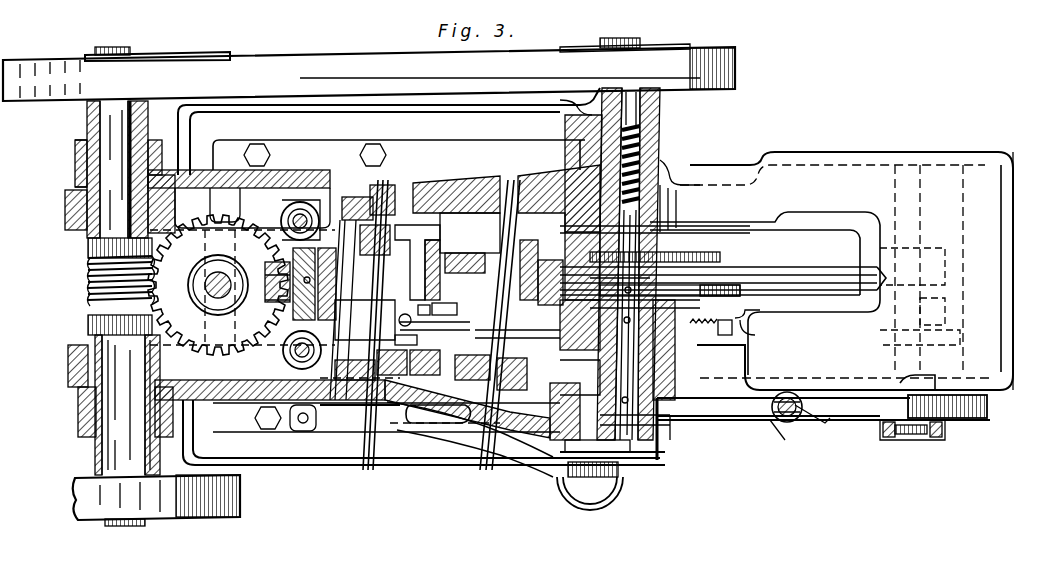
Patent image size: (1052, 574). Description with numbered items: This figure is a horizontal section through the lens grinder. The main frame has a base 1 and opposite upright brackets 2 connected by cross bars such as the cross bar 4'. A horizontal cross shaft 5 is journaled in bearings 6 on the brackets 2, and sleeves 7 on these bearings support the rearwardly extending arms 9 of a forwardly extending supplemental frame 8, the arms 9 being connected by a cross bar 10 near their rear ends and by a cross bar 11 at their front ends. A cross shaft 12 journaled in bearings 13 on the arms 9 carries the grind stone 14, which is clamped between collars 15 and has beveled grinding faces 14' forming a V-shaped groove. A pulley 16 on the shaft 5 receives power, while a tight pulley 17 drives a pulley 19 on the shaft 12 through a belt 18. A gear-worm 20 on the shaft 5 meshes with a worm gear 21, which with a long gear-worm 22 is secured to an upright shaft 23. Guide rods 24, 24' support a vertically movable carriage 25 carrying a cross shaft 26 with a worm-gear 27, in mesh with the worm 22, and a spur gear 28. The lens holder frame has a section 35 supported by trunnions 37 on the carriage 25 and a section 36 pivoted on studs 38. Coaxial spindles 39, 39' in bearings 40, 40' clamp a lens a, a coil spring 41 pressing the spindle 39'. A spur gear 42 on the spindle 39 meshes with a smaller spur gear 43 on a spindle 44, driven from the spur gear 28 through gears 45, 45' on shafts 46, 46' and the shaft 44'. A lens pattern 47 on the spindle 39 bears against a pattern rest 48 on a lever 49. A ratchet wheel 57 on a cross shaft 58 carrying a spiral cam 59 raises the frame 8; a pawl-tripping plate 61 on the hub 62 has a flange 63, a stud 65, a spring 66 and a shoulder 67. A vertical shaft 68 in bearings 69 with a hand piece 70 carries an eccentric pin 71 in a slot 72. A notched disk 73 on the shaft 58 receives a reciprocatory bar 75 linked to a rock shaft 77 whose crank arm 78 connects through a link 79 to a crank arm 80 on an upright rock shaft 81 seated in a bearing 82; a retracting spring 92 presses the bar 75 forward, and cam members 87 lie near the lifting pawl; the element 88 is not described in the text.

The base 1 is at (690, 182).
The upright brackets 2 is at (247, 160).
The cross bar 4' is at (252, 181).
The horizontal cross shaft 5 is at (114, 48).
The bearings 6 is at (80, 158).
The sleeves 7 is at (88, 125).
The supplemental frame 8 is at (905, 205).
The arms 9 is at (68, 212).
The cross bar 10 is at (140, 348).
The cross bar 11 is at (978, 278).
The horizontal cross shaft 12 is at (618, 40).
The bearings 13 is at (598, 122).
The grind stone 14 is at (723, 263).
The beveled grinding faces 14' is at (710, 265).
The collars 15 is at (715, 270).
The pulley 16 is at (200, 518).
The tight pulley 17 is at (180, 56).
The belt 18 is at (333, 63).
The pulley 19 is at (695, 52).
The gear-worm 20 is at (90, 296).
The worm gear 21 is at (90, 268).
The gear-worm 22 is at (215, 300).
The upright shaft 23 is at (212, 278).
The guide rod 24 is at (303, 191).
The guide rod 24' is at (285, 350).
The carriage 25 is at (283, 222).
The cross shaft 26 is at (280, 305).
The worm-gear 27 is at (365, 320).
The spur gear 28 is at (270, 272).
The frame section 35 is at (352, 195).
The frame section 36 is at (520, 195).
The pivotal trunnions 37 is at (314, 284).
The studs 38 is at (428, 210).
The spindle 39 is at (617, 380).
The spindle 39' is at (655, 288).
The bearing 40 is at (641, 325).
The bearing 40' is at (665, 108).
The coil spring 41 is at (650, 140).
The spur gear 42 is at (650, 428).
The spur gear 43 is at (520, 430).
The spindle 44 is at (495, 369).
The shaft 44' is at (426, 362).
The gears 45 is at (417, 262).
The gears 45' is at (540, 268).
The shaft 46 is at (470, 243).
The shaft 46' is at (365, 240).
The lens pattern 47 is at (625, 455).
The pattern rest 48 is at (570, 470).
The lever 49 is at (588, 505).
The ratchet wheel 57 is at (987, 408).
The cross shaft 58 is at (920, 352).
The spiral cam 59 is at (940, 260).
The pawl-tripping plate 61 is at (868, 420).
The hub 62 is at (888, 437).
The flange 63 is at (928, 378).
The stud 65 is at (908, 436).
The spring 66 is at (935, 437).
The shoulder 67 is at (947, 432).
The vertical shaft 68 is at (788, 392).
The bearings 69 is at (786, 421).
The hand piece 70 is at (818, 425).
The eccentric pin 71 is at (795, 398).
The slot 72 is at (775, 415).
The circular disk 73 is at (935, 325).
The reciprocatory bar 75 is at (755, 336).
The rock shaft 77 is at (724, 336).
The crank arm 78 is at (742, 310).
The link 79 is at (545, 335).
The crank arm 80 is at (405, 311).
The rock shaft 81 is at (440, 330).
The bearing 82 is at (397, 330).
The cam members 87 is at (425, 301).
The block 88 is at (450, 310).
The retracting spring 92 is at (700, 330).
The lens a is at (635, 290).